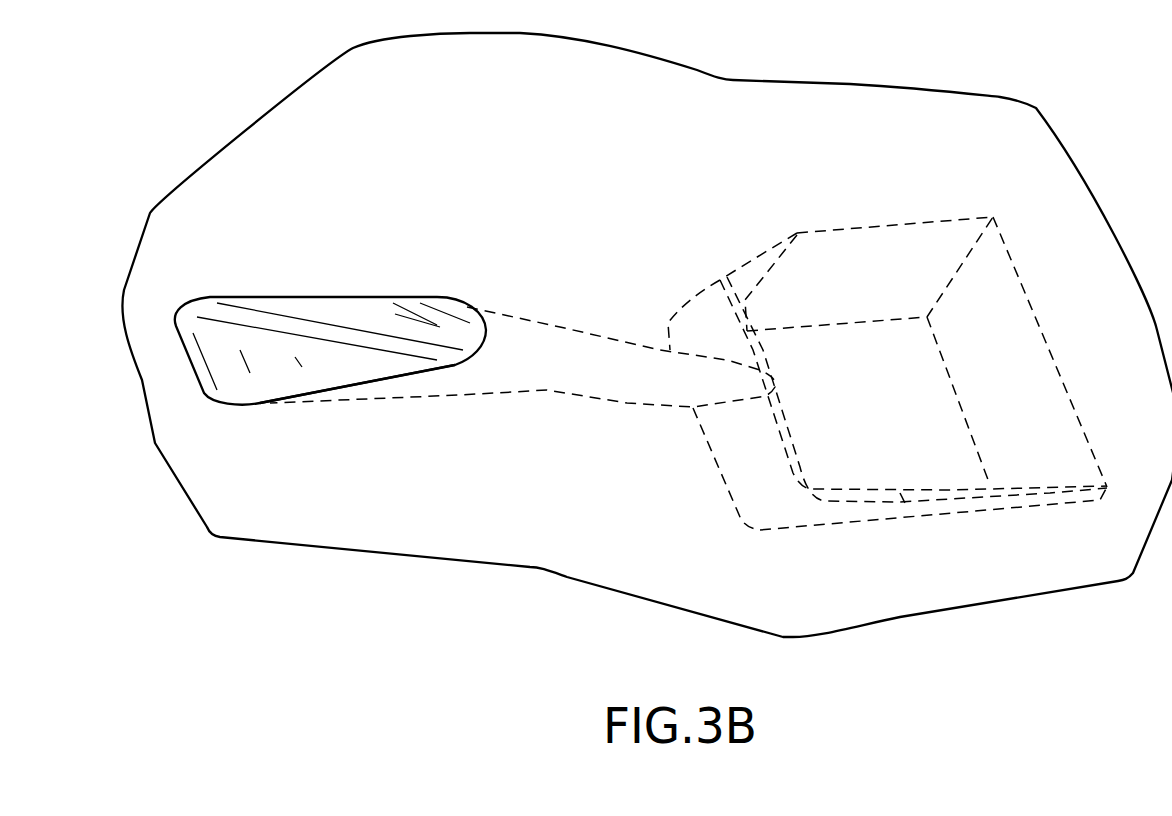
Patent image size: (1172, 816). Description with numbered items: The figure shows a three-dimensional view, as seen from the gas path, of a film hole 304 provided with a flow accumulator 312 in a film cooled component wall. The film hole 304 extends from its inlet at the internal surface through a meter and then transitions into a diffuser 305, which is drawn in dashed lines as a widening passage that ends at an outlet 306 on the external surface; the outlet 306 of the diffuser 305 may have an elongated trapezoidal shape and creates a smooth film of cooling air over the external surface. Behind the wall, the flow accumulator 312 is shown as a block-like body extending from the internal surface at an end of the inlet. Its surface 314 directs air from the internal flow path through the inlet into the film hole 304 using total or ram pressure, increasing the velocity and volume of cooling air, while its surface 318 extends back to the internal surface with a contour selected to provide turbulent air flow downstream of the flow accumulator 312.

The film hole 304 is at (590, 377).
The diffuser 305 is at (352, 370).
The outlet 306 is at (293, 337).
The flow accumulator 312 is at (937, 455).
The surface 314 is at (753, 478).
The surface 318 is at (1060, 375).